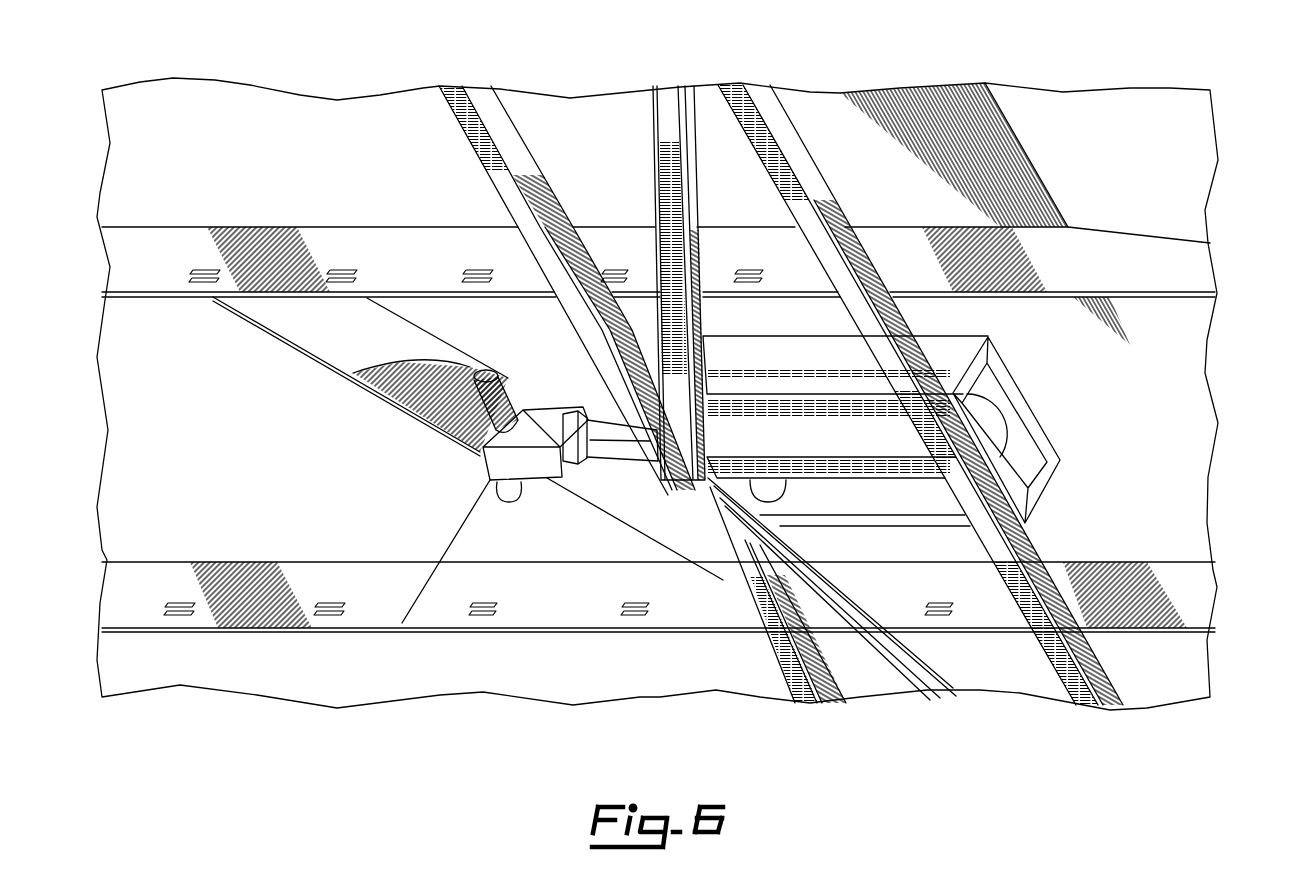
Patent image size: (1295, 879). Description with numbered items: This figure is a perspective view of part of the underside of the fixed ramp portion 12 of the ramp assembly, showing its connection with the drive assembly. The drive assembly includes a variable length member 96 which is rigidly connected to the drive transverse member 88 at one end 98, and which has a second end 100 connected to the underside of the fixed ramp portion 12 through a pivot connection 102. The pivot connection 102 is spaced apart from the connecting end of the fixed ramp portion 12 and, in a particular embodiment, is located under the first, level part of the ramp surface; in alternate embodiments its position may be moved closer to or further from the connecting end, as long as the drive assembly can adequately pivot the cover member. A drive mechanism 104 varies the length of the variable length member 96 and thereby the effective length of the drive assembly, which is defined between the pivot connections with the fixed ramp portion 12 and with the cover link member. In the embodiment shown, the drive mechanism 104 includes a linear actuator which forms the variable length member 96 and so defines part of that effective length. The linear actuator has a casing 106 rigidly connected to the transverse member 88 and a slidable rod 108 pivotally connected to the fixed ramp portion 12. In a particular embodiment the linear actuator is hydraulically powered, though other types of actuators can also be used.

The fixed ramp portion 12 is at (593, 123).
The drive transverse member 88 is at (669, 116).
The variable length member 96 is at (795, 478).
The one end 98 is at (1000, 473).
The second end 100 is at (550, 433).
The pivot connection 102 is at (443, 437).
The drive mechanism 104 is at (647, 488).
The casing 106 is at (858, 378).
The slidable rod 108 is at (620, 442).